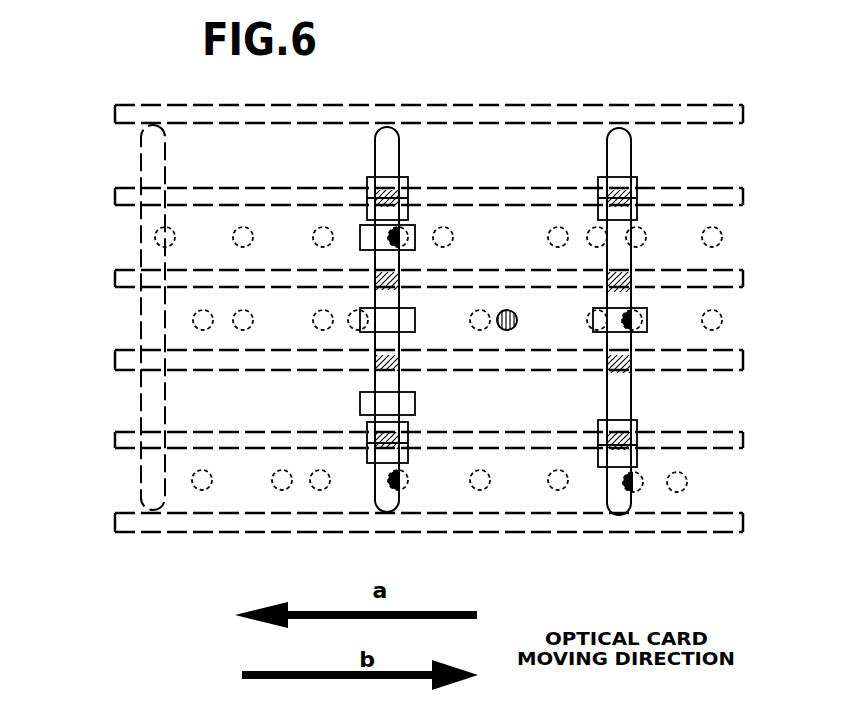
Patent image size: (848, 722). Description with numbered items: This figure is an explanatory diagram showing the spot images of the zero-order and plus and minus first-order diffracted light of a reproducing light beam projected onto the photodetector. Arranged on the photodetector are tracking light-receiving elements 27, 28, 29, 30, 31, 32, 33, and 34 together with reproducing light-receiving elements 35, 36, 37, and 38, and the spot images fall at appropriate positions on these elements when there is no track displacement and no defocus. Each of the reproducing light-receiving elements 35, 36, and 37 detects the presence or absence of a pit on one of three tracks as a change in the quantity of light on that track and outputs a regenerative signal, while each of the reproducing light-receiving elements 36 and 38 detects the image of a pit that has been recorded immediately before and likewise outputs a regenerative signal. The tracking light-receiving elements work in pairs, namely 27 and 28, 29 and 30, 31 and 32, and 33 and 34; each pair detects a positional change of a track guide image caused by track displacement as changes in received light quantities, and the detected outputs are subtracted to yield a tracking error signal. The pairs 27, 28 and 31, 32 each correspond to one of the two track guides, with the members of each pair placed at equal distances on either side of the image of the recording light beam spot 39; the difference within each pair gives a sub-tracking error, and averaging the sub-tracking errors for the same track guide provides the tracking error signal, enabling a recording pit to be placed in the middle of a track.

The tracking light-receiving element 27 is at (408, 178).
The tracking light-receiving element 28 is at (408, 208).
The tracking light-receiving element 29 is at (408, 426).
The tracking light-receiving element 30 is at (408, 460).
The tracking light-receiving element 31 is at (637, 186).
The tracking light-receiving element 32 is at (637, 207).
The tracking light-receiving element 33 is at (637, 425).
The tracking light-receiving element 34 is at (637, 458).
The reproducing light-receiving element 35 is at (360, 233).
The reproducing light-receiving element 36 is at (362, 320).
The reproducing light-receiving element 37 is at (360, 400).
The reproducing light-receiving element 38 is at (647, 318).
The recording light beam spot 39 is at (515, 327).